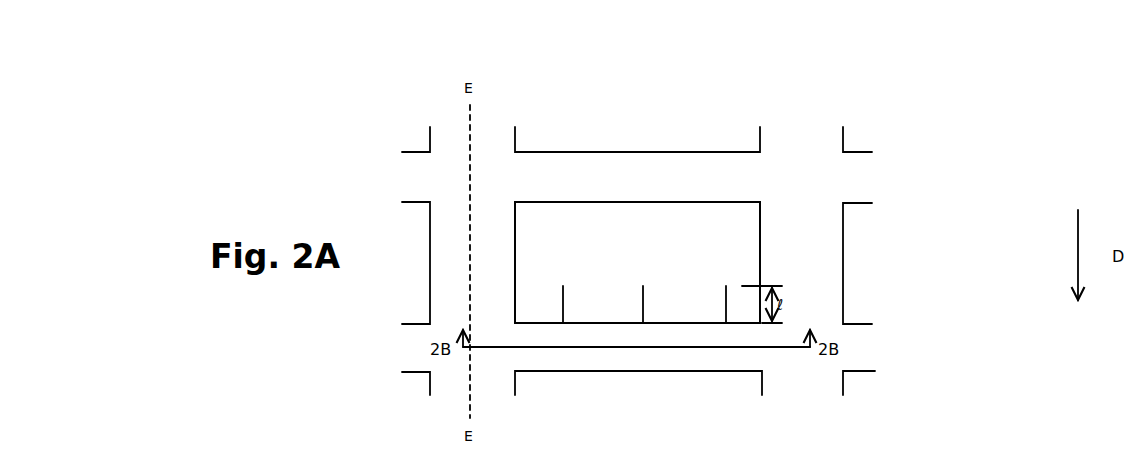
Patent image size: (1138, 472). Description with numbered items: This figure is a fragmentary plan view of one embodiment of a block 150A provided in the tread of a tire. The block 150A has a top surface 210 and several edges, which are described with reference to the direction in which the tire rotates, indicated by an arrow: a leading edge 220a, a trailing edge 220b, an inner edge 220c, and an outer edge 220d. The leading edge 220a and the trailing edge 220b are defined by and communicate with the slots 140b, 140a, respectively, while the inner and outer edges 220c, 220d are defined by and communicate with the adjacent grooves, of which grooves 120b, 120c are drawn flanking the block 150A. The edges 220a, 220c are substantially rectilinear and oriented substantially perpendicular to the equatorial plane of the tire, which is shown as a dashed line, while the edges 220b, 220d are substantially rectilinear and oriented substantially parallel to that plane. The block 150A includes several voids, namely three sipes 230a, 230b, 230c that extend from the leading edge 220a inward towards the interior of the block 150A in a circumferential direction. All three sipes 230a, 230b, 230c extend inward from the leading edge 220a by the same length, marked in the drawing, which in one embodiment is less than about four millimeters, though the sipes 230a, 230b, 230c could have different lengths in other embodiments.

The groove 120b is at (447, 233).
The groove 120c is at (820, 243).
The slot 140a is at (632, 168).
The slot 140b is at (638, 360).
The block 150A is at (598, 190).
The top surface 210 is at (683, 235).
The leading edge 220a is at (588, 323).
The trailing edge 220b is at (702, 202).
The inner edge 220c is at (513, 250).
The outer edge 220d is at (762, 243).
The sipe 230a is at (566, 300).
The sipe 230b is at (645, 305).
The sipe 230c is at (725, 305).